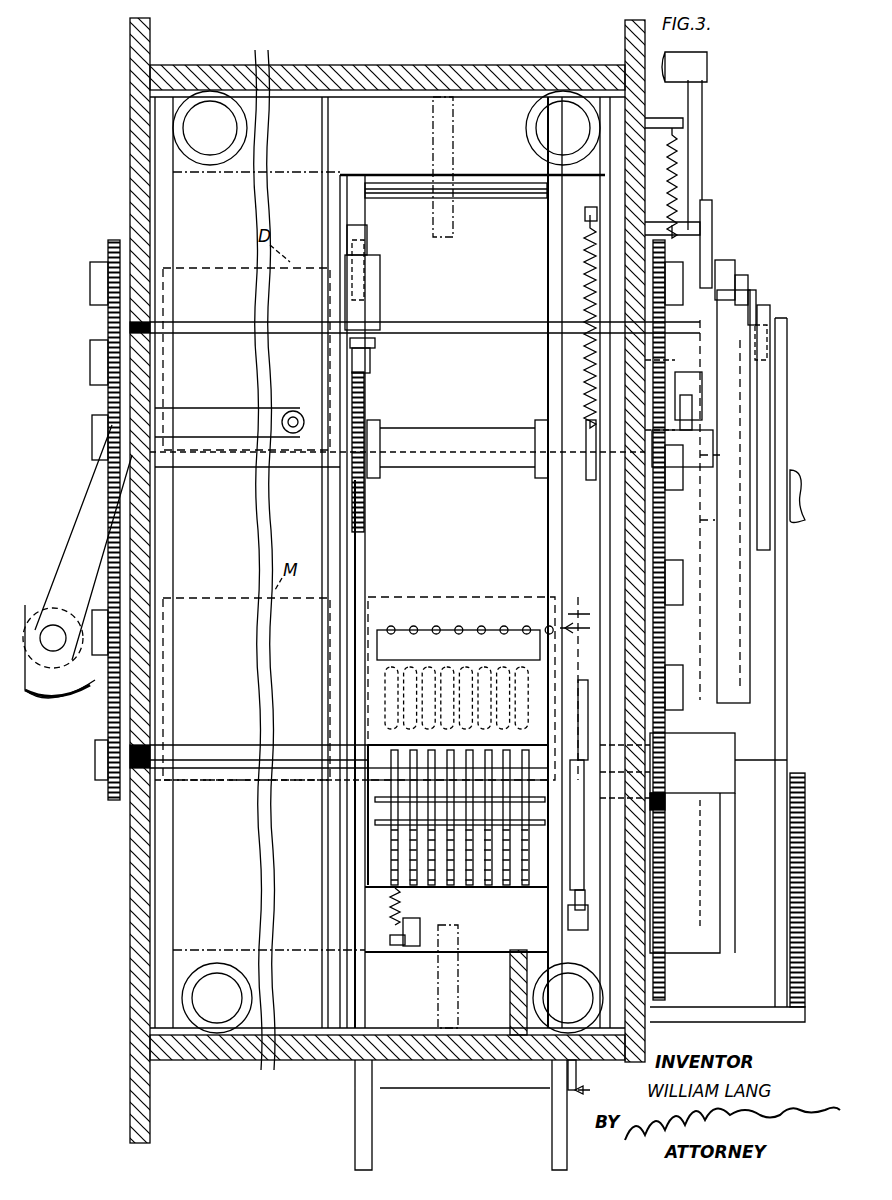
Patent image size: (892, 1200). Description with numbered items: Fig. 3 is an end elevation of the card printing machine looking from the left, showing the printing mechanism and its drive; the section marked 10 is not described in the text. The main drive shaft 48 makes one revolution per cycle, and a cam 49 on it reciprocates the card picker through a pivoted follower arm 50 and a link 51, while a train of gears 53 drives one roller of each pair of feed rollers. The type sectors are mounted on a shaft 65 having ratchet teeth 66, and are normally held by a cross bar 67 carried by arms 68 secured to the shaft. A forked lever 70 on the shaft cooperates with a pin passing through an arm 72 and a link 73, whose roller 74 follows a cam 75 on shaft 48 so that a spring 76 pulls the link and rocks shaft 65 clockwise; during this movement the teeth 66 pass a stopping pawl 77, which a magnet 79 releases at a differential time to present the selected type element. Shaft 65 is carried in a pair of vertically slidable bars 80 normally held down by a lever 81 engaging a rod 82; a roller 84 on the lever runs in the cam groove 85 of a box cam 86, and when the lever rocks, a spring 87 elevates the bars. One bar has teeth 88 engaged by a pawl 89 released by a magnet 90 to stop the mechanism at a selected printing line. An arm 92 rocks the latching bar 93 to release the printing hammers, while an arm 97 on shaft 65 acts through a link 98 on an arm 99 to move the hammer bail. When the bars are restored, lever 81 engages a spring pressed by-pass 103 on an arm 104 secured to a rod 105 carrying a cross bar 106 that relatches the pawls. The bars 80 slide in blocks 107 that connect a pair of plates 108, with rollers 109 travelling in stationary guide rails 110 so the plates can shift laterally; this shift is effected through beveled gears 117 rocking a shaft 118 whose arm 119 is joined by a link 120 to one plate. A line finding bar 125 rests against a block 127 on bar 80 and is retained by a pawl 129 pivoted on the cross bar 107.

The machine frame section line 10 is at (590, 851).
The main drive shaft 48 is at (797, 522).
The cam 49 is at (727, 260).
The pivoted follower arm 50 is at (712, 204).
The link 51 is at (703, 152).
The train of gears 53 is at (108, 350).
The shaft 65 is at (236, 746).
The ratchet teeth 66 is at (400, 850).
The cross bar 67 is at (372, 755).
The arms 68 is at (372, 772).
The forked lever 70 is at (727, 812).
The arm 72 is at (712, 858).
The link 73 is at (775, 695).
The roller 74 is at (768, 320).
The cam 75 is at (770, 548).
The spring 76 is at (792, 880).
The stopping pawl 77 is at (395, 820).
The magnet 79 is at (448, 645).
The vertically slidable bars 80 is at (360, 545).
The lever 81 is at (752, 295).
The rod 82 is at (625, 470).
The roller 84 is at (767, 362).
The cam groove 85 is at (720, 552).
The box cam 86 is at (742, 280).
The spring 87 is at (590, 258).
The teeth 88 is at (365, 430).
The pawl 89 is at (370, 368).
The magnet 90 is at (372, 300).
The arm 92 is at (365, 935).
The latching bar 93 is at (487, 910).
The arm 97 is at (605, 788).
The link 98 is at (605, 812).
The arm 99 is at (605, 878).
The spring pressed by-pass 103 is at (680, 432).
The arm 104 is at (650, 348).
The rod 105 is at (475, 322).
The cross bar 106 is at (375, 345).
The blocks 107 is at (512, 180).
The plates 108 is at (178, 548).
The rollers 109 is at (380, 118).
The stationary guide rails 110 is at (290, 72).
The beveled gears 117 is at (38, 588).
The shaft 118 is at (52, 650).
The arm 119 is at (85, 498).
The link 120 is at (228, 408).
The vertically slidable bar 125 is at (582, 680).
The block 127 is at (566, 1080).
The pawl 129 is at (605, 832).